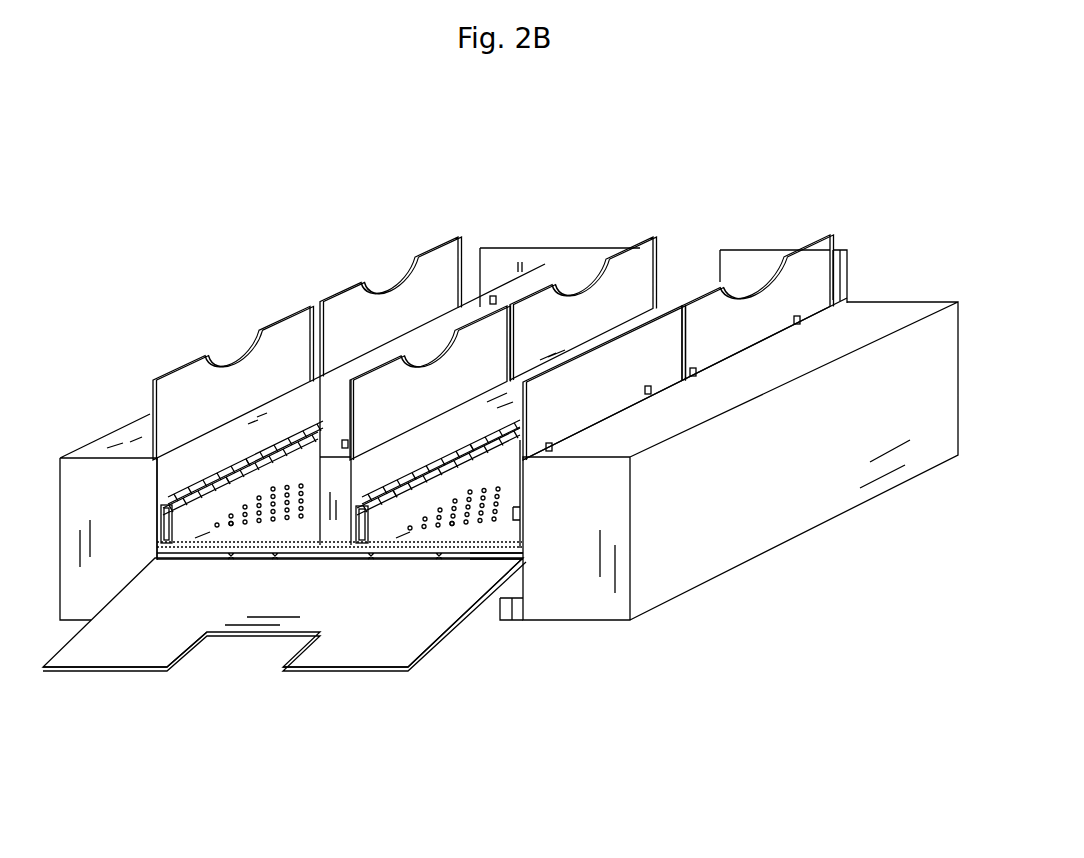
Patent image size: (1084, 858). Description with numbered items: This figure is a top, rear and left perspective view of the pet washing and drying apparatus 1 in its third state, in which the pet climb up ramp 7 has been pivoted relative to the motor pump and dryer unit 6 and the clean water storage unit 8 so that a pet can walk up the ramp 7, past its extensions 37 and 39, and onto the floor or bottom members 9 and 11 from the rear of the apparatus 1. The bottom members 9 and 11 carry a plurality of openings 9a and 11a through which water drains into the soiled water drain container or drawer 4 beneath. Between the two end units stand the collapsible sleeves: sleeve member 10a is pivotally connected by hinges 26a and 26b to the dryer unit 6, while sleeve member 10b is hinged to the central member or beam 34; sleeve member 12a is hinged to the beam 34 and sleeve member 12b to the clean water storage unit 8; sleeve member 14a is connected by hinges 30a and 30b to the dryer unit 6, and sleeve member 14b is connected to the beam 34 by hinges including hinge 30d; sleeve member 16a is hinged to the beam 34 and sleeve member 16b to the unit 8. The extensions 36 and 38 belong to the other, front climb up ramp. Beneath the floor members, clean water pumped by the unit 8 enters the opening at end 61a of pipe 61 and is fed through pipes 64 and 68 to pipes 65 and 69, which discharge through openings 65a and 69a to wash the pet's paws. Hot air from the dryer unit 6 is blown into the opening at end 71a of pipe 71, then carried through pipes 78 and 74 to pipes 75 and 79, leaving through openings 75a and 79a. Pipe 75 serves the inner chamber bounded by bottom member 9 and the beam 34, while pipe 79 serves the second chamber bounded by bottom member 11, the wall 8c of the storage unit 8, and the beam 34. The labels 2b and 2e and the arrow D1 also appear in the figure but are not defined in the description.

The apparatus 1 is at (652, 208).
The side wall 2b is at (740, 352).
The rear wall portion 2e is at (847, 267).
The soiled water drain container or drawer 4 is at (482, 617).
The motor pump and dryer unit 6 is at (733, 525).
The pet climb up ramp 7 is at (321, 617).
The clean water storage unit 8 is at (75, 509).
The wall 8c is at (163, 487).
The floor or bottom member 9 is at (467, 535).
The openings 9a is at (447, 520).
The sleeve or member 10a is at (545, 416).
The sleeve or member 10b is at (365, 401).
The floor or bottom member 11 is at (257, 533).
The openings 11a is at (230, 530).
The sleeve or member 12a is at (330, 403).
The sleeve or member 12b is at (203, 404).
The sleeve or member 14a is at (733, 336).
The sleeve or member 14b is at (553, 327).
The sleeve or member 16a is at (493, 297).
The sleeve or member 16b is at (328, 327).
The hinge 26a is at (552, 447).
The hinge 26b is at (648, 395).
The hinge 30a is at (693, 376).
The hinge 30b is at (800, 322).
The hinge 30d is at (347, 442).
The member or beam 34 is at (327, 481).
The extension 36 is at (757, 268).
The extension 37 is at (332, 663).
The extension 38 is at (542, 255).
The extension 39 is at (142, 653).
The pipe 61 is at (375, 558).
The end of pipe 61a is at (162, 562).
The pipe 64 is at (358, 532).
The pipe 65 is at (382, 497).
The openings 65a is at (398, 478).
The pipe 68 is at (160, 535).
The pipe 69 is at (198, 487).
The openings 69a is at (232, 482).
The pipe 71 is at (290, 553).
The end of pipe 71a is at (520, 545).
The pipe 74 is at (358, 535).
The pipe 75 is at (442, 460).
The openings 75a is at (470, 450).
The pipe 78 is at (165, 530).
The pipe 79 is at (240, 470).
The openings 79a is at (248, 470).
The direction D1 is at (190, 733).